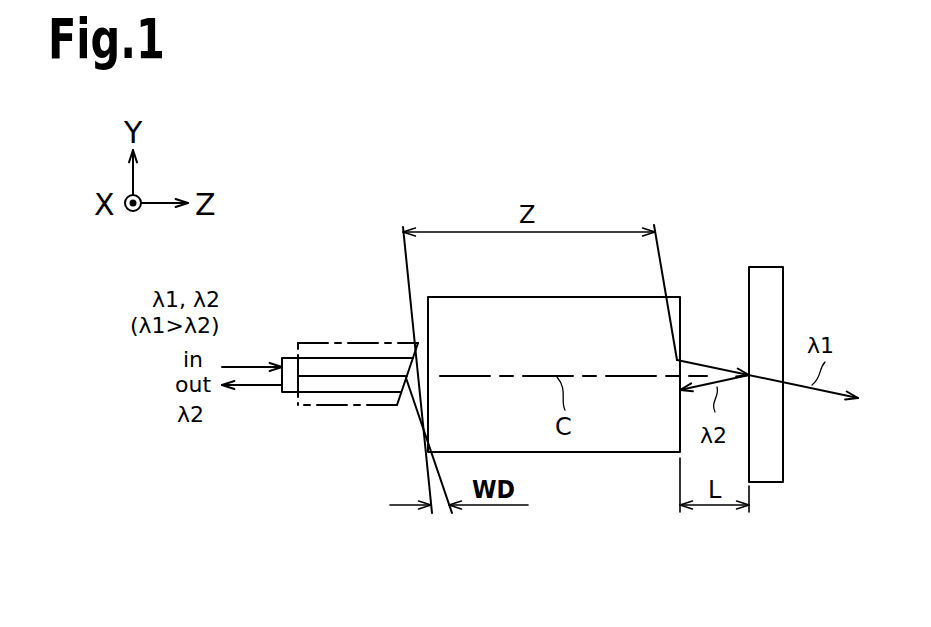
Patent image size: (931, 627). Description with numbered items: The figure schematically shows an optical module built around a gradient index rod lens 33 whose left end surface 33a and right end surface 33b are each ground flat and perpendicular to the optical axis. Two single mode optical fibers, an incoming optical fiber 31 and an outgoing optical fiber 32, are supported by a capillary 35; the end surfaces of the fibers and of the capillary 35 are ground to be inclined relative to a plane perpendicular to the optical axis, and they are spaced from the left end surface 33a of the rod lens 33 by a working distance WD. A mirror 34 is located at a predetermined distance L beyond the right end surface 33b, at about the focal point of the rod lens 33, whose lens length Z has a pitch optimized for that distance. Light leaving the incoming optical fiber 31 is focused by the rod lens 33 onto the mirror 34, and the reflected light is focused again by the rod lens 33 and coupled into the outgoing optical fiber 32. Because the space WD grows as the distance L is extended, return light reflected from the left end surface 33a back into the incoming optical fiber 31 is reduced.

The incoming optical fiber 31 is at (283, 358).
The outgoing optical fiber 32 is at (283, 393).
The gradient index rod lens 33 is at (527, 307).
The left end surface 33a is at (423, 308).
The right end surface 33b is at (680, 312).
The mirror 34 is at (765, 267).
The capillary 35 is at (353, 342).